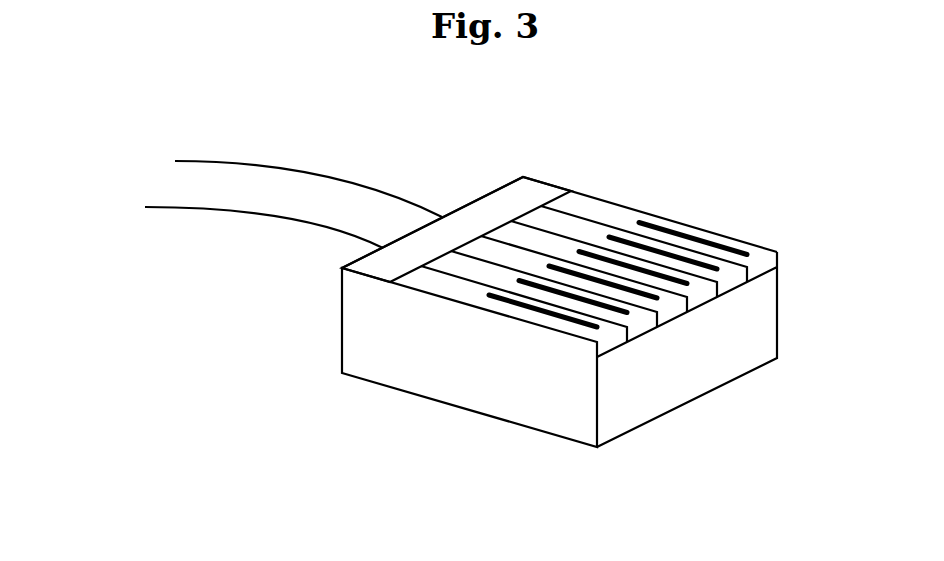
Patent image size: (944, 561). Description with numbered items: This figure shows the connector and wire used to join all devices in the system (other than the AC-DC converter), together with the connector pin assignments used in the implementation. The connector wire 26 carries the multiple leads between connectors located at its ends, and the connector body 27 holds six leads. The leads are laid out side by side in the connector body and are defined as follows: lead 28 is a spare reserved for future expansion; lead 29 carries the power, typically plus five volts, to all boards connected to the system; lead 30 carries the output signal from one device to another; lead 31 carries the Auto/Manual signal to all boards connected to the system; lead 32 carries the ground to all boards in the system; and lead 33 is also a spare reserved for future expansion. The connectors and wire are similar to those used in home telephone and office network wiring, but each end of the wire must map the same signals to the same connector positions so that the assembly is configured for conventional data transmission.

The connector wire 26 is at (303, 231).
The connector body 27 is at (505, 183).
The lead 28 is at (737, 248).
The lead 29 is at (688, 256).
The lead 30 is at (640, 267).
The lead 31 is at (590, 284).
The lead 32 is at (551, 297).
The lead 33 is at (500, 305).